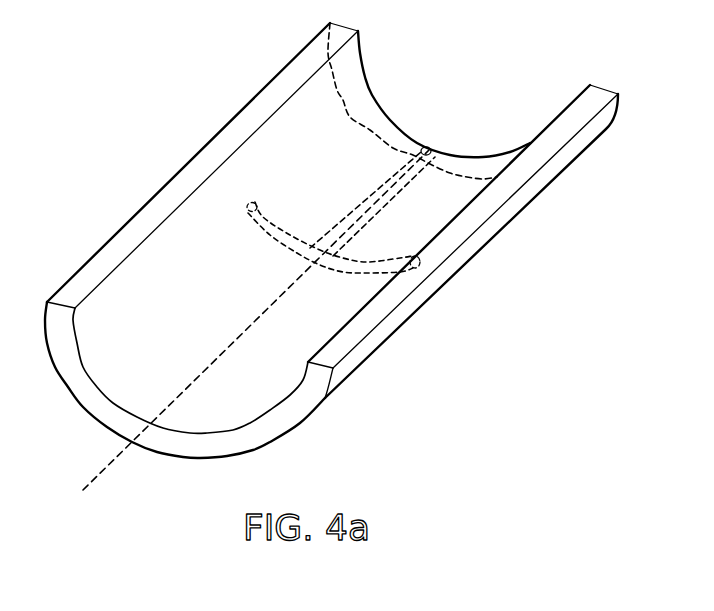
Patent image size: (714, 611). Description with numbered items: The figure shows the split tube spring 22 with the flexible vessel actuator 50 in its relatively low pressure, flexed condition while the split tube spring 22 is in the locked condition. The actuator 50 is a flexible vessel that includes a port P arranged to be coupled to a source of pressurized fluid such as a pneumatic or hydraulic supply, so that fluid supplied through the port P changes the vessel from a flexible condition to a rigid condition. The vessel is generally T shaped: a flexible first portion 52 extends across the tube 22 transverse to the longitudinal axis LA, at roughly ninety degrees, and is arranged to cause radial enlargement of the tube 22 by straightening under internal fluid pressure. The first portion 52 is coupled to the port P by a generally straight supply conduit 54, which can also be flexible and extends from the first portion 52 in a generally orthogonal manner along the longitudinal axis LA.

The split tube spring 22 is at (153, 193).
The flexible vessel actuator 50 is at (406, 219).
The flexible first portion 52 is at (284, 232).
The supply conduit 54 is at (372, 218).
The port P is at (432, 150).
The longitudinal axis LA is at (223, 352).